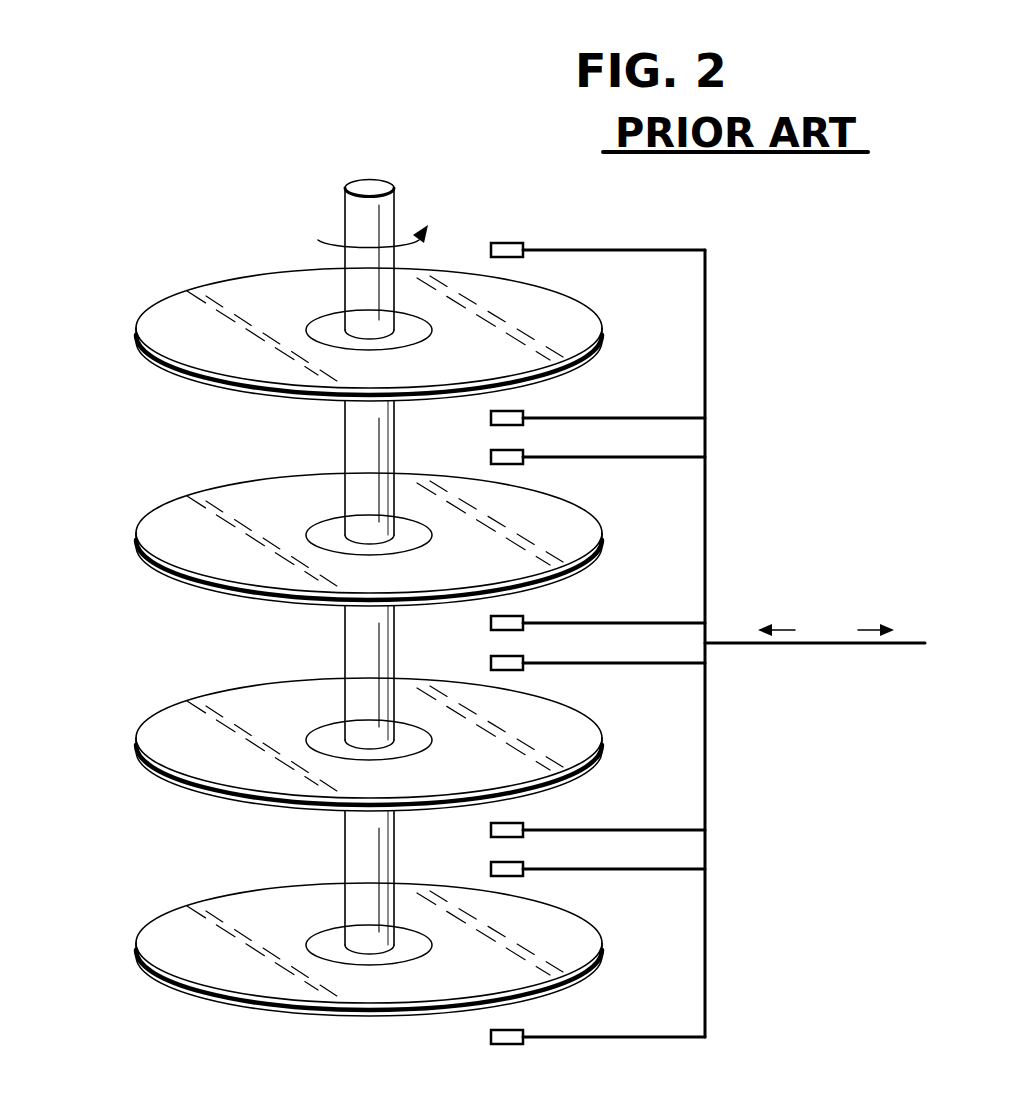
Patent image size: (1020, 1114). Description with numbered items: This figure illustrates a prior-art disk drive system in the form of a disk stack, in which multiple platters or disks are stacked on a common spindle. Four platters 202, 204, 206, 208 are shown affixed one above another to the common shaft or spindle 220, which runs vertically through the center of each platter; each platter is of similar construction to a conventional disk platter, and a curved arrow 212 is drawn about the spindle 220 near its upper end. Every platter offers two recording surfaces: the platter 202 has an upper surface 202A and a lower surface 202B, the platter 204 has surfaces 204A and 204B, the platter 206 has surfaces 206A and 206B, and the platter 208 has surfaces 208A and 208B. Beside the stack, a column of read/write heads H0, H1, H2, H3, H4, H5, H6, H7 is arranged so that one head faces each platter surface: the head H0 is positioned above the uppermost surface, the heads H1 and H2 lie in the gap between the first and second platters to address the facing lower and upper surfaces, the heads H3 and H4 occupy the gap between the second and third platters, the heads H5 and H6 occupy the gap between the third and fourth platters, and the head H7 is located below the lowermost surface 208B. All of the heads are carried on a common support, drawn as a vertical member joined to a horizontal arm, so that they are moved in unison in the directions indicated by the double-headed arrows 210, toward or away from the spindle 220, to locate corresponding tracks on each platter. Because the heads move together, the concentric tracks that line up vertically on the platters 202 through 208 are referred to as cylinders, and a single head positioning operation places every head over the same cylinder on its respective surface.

The platter 202 is at (323, 342).
The platter surface 202A is at (185, 310).
The platter surface 202B is at (185, 378).
The platter 204 is at (323, 555).
The platter surface 204A is at (185, 515).
The platter surface 204B is at (185, 583).
The platter 206 is at (323, 760).
The platter surface 206A is at (185, 720).
The platter surface 206B is at (185, 788).
The platter 208 is at (323, 965).
The platter surface 208A is at (185, 925).
The platter surface 208B is at (185, 993).
The arrows 210 is at (872, 630).
The disk rotation direction 212 is at (320, 241).
The spindle 220 is at (373, 184).
The head 0 H0 is at (523, 244).
The read/write head H1 is at (523, 411).
The read/write head H2 is at (523, 464).
The read/write head H3 is at (523, 616).
The read/write head H4 is at (523, 670).
The read/write head H5 is at (523, 823).
The read/write head H6 is at (523, 876).
The read/write head H7 is at (518, 1044).